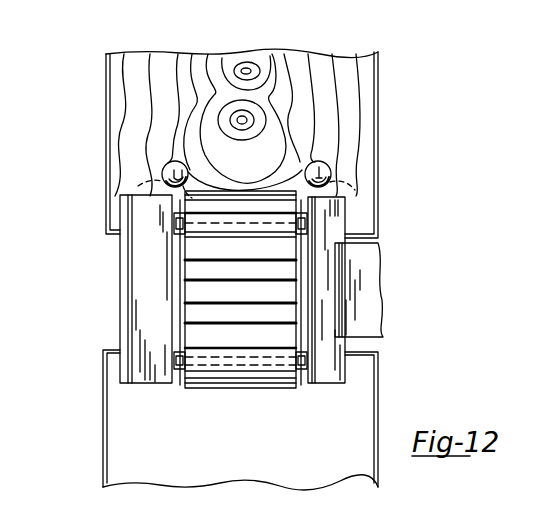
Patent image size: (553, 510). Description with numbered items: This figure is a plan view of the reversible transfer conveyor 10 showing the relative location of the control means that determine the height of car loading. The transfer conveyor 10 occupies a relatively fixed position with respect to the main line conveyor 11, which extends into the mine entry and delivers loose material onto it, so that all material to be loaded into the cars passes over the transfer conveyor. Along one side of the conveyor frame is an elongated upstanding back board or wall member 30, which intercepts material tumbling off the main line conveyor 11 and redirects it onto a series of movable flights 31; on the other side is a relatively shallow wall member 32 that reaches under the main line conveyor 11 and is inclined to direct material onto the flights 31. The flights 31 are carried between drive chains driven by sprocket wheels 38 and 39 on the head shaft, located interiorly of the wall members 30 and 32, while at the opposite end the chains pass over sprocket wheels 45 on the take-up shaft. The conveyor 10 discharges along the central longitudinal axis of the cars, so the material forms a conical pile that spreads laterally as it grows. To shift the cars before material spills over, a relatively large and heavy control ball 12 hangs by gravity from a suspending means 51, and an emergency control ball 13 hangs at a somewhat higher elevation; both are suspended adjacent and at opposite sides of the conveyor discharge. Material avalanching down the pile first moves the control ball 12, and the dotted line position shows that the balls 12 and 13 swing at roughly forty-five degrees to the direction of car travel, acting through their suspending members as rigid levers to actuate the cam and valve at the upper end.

The reversible transfer conveyor 10 is at (103, 305).
The main line conveyor 11 is at (370, 327).
The control ball 12 is at (165, 166).
The emergency control ball 13 is at (327, 170).
The back board or wall member 30 is at (138, 314).
The movable flights 31 is at (240, 262).
The shallow wall member 32 is at (335, 368).
The sprocket wheel 38 is at (175, 225).
The sprocket wheel 39 is at (306, 226).
The sprocket wheels 45 is at (301, 370).
The suspending means 51 is at (180, 176).